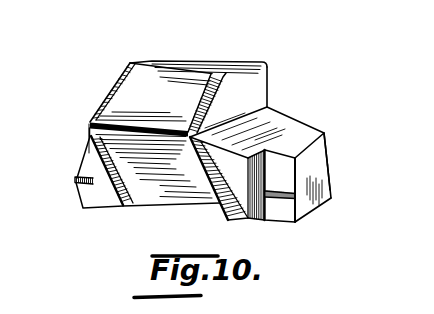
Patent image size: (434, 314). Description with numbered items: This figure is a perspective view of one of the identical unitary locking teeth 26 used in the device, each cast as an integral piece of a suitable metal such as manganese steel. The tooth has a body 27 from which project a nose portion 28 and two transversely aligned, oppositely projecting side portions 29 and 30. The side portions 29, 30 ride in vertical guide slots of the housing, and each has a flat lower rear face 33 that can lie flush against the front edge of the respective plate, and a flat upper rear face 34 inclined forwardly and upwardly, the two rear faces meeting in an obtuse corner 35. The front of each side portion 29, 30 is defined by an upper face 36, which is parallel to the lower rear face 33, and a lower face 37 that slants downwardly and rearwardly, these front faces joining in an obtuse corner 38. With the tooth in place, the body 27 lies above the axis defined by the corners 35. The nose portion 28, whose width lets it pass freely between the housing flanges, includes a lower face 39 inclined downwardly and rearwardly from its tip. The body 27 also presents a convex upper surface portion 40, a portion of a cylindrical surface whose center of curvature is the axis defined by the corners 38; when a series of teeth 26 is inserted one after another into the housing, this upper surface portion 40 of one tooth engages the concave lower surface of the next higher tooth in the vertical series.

The locking tooth 26 is at (106, 82).
The body 27 is at (234, 90).
The nose portion 28 is at (107, 120).
The side portion 29 is at (78, 171).
The side portion 30 is at (320, 186).
The flat lower rear face 33 is at (333, 184).
The flat upper rear face 34 is at (329, 147).
The obtuse corner 35 is at (330, 175).
The upper face 36 is at (87, 153).
The lower face 37 is at (85, 197).
The obtuse corner 38 is at (77, 176).
The lower face 39 is at (168, 180).
The convex upper surface portion 40 is at (193, 61).